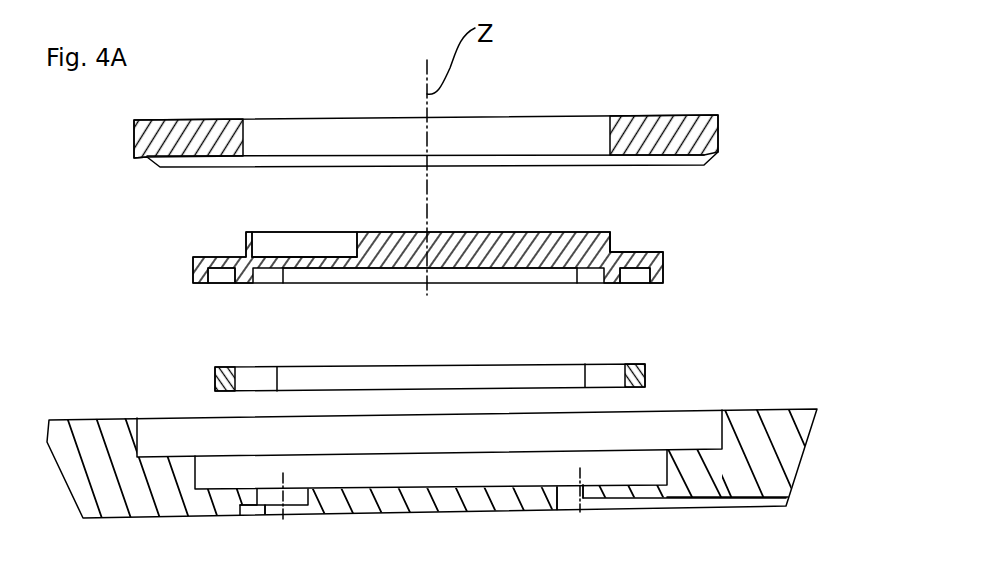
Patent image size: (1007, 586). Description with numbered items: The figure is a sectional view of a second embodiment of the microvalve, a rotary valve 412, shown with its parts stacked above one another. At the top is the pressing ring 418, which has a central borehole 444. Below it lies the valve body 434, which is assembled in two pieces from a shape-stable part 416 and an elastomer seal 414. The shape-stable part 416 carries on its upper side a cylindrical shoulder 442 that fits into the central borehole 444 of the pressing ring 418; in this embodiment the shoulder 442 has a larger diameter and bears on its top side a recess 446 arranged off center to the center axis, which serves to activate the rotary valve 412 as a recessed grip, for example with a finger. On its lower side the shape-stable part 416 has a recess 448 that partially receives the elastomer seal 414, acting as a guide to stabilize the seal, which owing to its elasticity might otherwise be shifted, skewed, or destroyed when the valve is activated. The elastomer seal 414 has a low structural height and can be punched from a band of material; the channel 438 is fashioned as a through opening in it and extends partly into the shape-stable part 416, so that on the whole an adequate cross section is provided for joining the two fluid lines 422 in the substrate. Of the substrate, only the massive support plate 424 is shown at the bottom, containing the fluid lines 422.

The rotary valve 412 is at (772, 159).
The elastomer seal 414 is at (646, 368).
The shape-stable part 416 is at (484, 263).
The pressing ring 418 is at (483, 97).
The fluid lines 422 is at (258, 513).
The support plate 424 is at (471, 464).
The valve body 434 is at (146, 223).
The channel 438 is at (507, 272).
The cylindrical shoulder 442 is at (612, 236).
The central borehole 444 is at (610, 137).
The recess 446 is at (288, 246).
The recess 448 is at (224, 284).